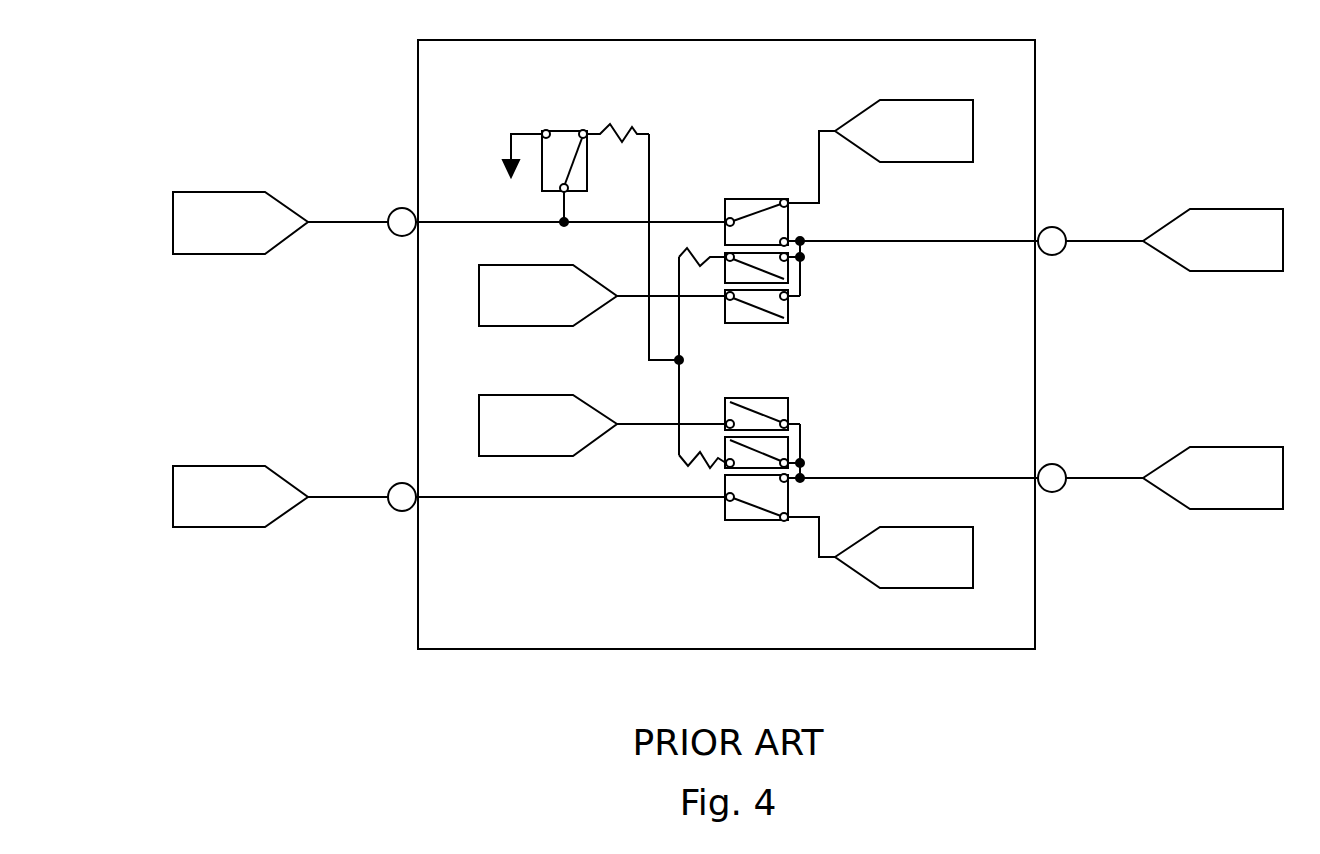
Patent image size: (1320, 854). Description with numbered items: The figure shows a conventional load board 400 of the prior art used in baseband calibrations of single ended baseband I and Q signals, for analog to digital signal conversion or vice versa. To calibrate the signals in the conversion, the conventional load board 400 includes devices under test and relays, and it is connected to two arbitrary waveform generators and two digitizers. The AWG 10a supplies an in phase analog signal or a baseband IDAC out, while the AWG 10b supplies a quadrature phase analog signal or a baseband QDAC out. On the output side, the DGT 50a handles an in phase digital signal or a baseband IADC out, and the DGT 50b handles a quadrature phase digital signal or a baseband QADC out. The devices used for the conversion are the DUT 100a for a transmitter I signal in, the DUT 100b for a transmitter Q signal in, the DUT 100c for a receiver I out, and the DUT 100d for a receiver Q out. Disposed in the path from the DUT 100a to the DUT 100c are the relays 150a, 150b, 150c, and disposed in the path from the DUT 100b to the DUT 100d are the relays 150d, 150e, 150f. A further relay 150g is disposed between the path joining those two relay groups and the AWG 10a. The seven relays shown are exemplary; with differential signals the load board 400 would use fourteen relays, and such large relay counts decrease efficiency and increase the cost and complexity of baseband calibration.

The conventional load board 400 is at (1220, 100).
The AWG 10a is at (203, 192).
The AWG 10b is at (203, 527).
The DGT 50a is at (1252, 209).
The DGT 50b is at (1252, 509).
The DUT 100a is at (973, 131).
The DUT 100b is at (973, 557).
The DUT 100c is at (479, 423).
The DUT 100d is at (479, 297).
The relay 150a is at (757, 199).
The relay 150b is at (788, 268).
The relay 150c is at (788, 307).
The relay 150d is at (788, 413).
The relay 150e is at (788, 450).
The relay 150f is at (757, 520).
The relay 150g is at (563, 131).